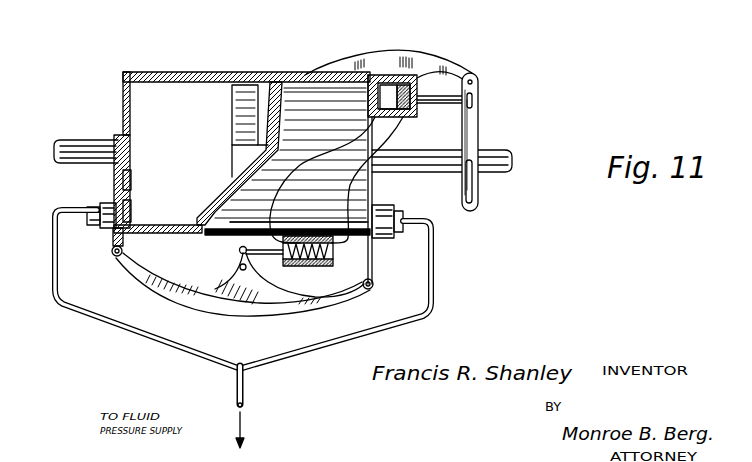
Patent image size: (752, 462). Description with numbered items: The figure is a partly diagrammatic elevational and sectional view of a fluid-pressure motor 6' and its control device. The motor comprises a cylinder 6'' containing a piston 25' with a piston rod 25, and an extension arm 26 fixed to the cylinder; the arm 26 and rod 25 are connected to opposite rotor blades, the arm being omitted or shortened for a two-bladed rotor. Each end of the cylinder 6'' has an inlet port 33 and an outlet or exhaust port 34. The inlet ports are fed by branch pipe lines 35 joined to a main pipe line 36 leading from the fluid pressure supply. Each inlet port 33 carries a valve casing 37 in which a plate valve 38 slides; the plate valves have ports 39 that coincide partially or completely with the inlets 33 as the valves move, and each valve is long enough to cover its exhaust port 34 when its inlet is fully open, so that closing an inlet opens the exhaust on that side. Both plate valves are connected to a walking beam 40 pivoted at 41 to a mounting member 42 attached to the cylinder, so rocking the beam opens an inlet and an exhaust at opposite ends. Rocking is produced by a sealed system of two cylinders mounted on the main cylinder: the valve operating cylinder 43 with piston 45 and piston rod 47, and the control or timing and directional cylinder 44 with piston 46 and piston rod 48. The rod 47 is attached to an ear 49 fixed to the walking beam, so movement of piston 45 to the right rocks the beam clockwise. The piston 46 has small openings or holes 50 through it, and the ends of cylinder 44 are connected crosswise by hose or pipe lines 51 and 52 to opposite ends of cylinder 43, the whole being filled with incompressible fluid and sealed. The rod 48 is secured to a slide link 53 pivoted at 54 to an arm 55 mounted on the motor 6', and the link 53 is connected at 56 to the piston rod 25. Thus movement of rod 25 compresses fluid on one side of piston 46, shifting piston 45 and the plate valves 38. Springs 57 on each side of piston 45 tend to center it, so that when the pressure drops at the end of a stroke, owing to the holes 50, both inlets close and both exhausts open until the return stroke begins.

The cylinder 6'' is at (241, 140).
The motor 6' is at (288, 153).
The piston rod 25 is at (459, 141).
The piston 25' is at (237, 153).
The extension arm 26 is at (76, 138).
The inlet port 33 is at (130, 213).
The outlet or exhaust port 34 is at (132, 185).
The branch pipe lines 35 is at (53, 262).
The main pipe line 36 is at (249, 393).
The valve casing 37 is at (98, 228).
The plate valve 38 is at (117, 177).
The ports 39 is at (97, 203).
The walking beam 40 is at (183, 297).
The pivot 41 is at (243, 271).
The mounting member 42 is at (230, 243).
The valve operating cylinder 43 is at (318, 268).
The control or timing and directional cylinder 44 is at (377, 77).
The piston 45 is at (312, 267).
The piston 46 is at (390, 113).
The piston rod 47 is at (265, 255).
The piston rod 48 is at (440, 105).
The ear 49 is at (237, 251).
The openings or holes 50 is at (383, 97).
The hose or pipe line 51 is at (308, 187).
The hose or pipe line 52 is at (307, 175).
The slide link 53 is at (480, 120).
The pivot 54 is at (473, 78).
The arm 55 is at (433, 67).
The connection 56 is at (487, 173).
The springs 57 is at (334, 257).